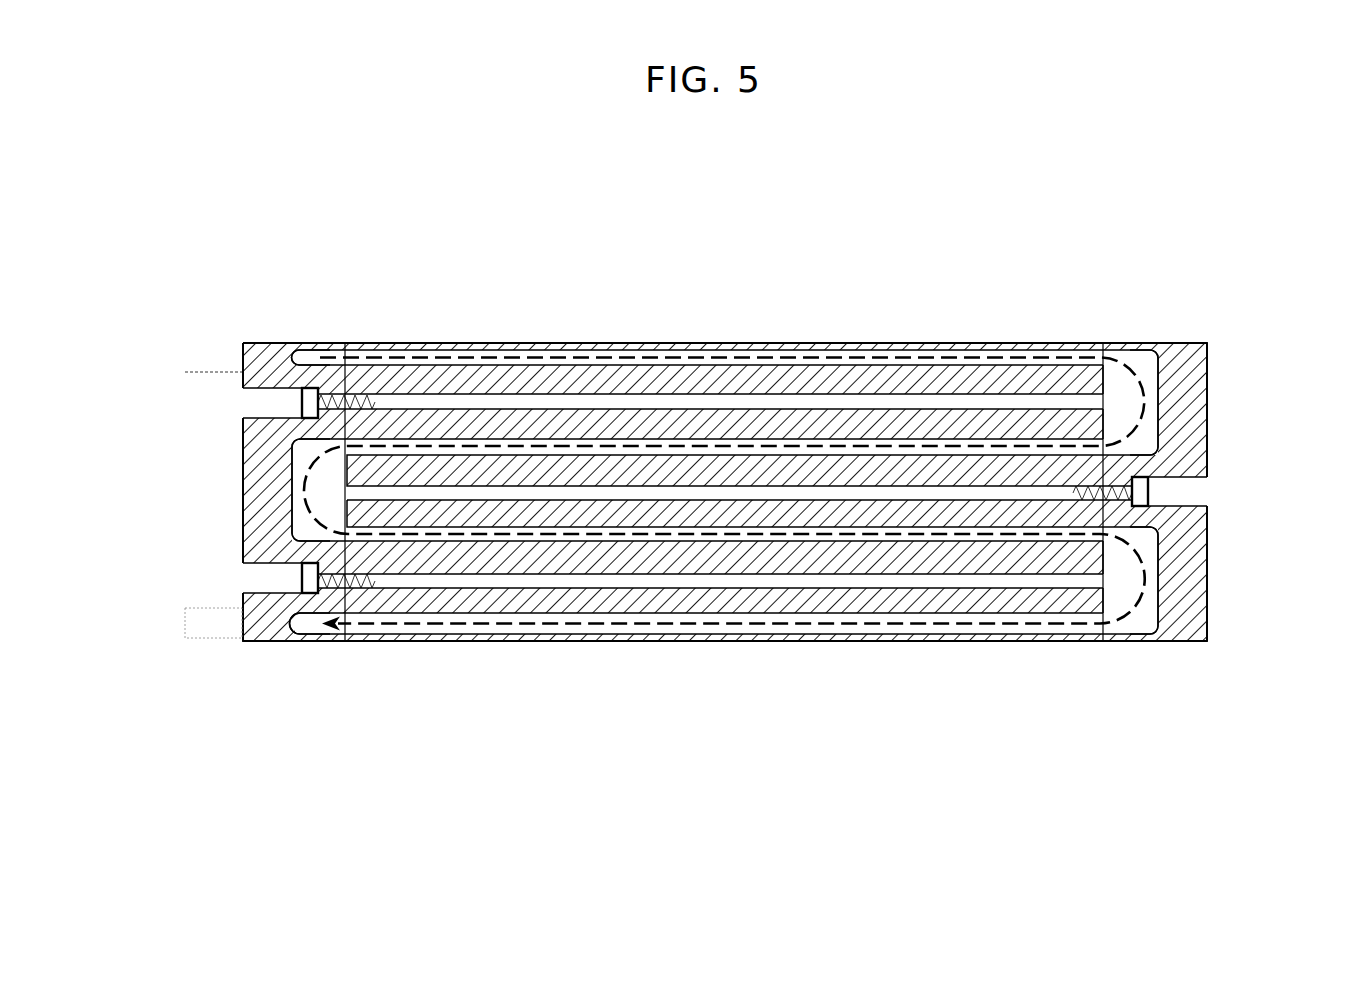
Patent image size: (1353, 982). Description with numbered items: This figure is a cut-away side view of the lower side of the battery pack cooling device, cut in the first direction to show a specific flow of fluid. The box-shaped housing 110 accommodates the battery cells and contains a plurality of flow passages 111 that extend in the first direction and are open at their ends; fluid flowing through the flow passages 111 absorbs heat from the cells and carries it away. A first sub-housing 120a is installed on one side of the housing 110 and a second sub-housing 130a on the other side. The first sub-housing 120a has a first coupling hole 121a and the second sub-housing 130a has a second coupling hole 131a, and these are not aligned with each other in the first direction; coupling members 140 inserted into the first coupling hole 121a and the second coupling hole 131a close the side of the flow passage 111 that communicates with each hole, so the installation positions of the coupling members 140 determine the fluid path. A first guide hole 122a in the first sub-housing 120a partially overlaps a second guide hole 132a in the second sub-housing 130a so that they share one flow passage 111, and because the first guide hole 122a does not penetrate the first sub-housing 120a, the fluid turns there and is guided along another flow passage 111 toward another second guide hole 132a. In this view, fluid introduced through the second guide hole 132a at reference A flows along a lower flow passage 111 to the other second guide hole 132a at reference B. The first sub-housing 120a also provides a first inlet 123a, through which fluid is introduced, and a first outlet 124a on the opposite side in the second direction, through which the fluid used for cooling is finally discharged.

The housing 110 is at (621, 642).
The flow passage 111 is at (827, 453).
The first sub-housing 120a is at (263, 627).
The first coupling hole 121a is at (264, 407).
The first guide hole 122a is at (313, 357).
The first inlet 123a is at (200, 353).
The first outlet 124a is at (188, 618).
The second sub-housing 130a is at (1193, 355).
The second coupling hole 131a is at (1192, 497).
The second guide hole 132a is at (1149, 376).
The coupling member 140 is at (312, 414).
The second guide hole position A is at (1137, 409).
The second guide hole position B is at (1137, 579).